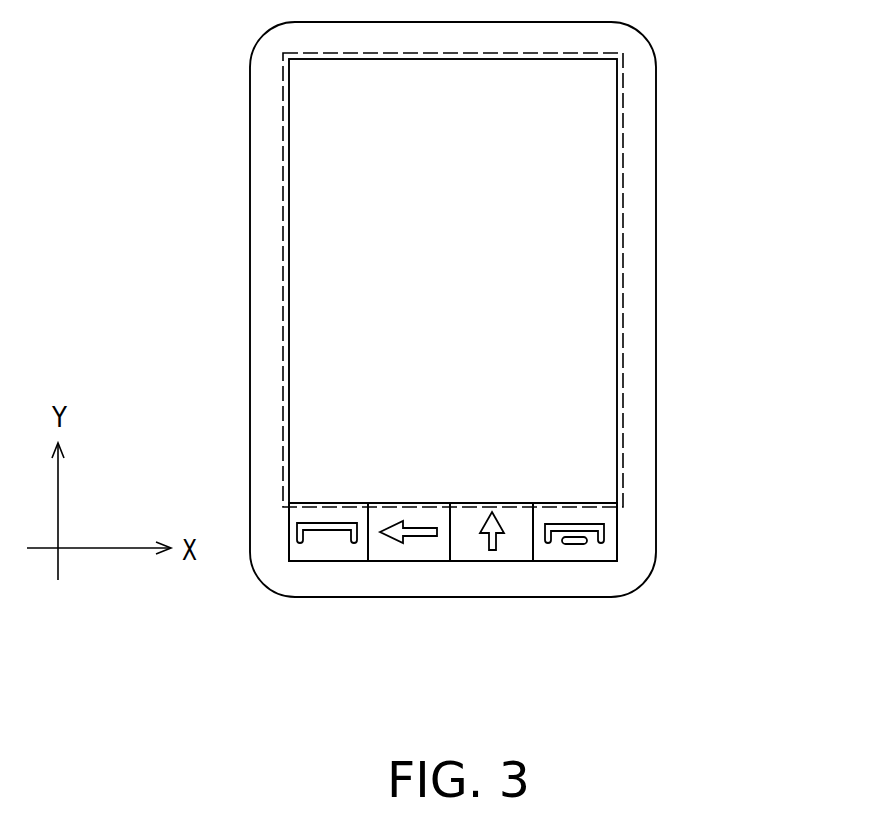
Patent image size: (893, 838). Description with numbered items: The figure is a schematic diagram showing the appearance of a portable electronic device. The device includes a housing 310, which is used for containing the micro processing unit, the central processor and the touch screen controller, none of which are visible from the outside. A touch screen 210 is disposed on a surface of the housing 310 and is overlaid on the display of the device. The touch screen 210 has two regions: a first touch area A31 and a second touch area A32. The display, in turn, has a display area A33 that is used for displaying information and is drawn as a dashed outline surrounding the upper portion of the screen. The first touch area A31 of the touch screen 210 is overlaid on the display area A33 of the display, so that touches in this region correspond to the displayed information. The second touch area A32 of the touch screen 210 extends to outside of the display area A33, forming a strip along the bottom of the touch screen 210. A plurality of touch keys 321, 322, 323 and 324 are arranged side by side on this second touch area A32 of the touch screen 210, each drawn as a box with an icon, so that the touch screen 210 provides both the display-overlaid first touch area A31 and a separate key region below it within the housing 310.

The housing 310 is at (656, 278).
The display area A33 is at (623, 151).
The first touch area A31 is at (623, 449).
The second touch area A32 is at (617, 535).
The touch screen 210 is at (756, 432).
The touch key 321 is at (327, 550).
The touch key 322 is at (413, 550).
The touch key 323 is at (511, 550).
The touch key 324 is at (576, 550).